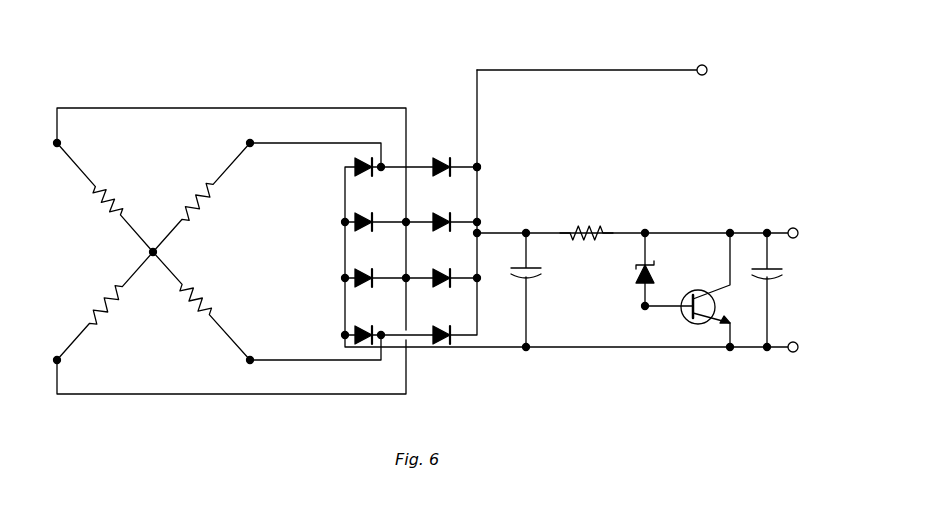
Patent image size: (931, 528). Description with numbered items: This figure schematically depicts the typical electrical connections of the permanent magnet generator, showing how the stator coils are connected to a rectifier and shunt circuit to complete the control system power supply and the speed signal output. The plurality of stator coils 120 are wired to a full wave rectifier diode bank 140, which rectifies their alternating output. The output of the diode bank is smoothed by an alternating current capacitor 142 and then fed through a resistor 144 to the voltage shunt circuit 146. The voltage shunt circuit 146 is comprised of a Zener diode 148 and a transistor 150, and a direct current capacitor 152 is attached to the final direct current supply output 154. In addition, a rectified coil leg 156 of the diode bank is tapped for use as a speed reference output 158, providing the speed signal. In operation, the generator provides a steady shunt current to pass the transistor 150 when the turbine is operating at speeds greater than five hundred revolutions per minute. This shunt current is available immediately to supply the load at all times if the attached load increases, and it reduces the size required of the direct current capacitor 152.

The stator coils 120 is at (158, 207).
The full wave rectifier diode bank 140 is at (426, 152).
The rectified coil leg 156 is at (476, 164).
The speed reference output 158 is at (708, 68).
The alternating current capacitor 142 is at (508, 272).
The resistor 144 is at (588, 232).
The Zener diode 148 is at (633, 268).
The voltage shunt circuit 146 is at (678, 267).
The direct current supply output 154 is at (800, 233).
The direct current capacitor 152 is at (782, 273).
The transistor 150 is at (686, 313).